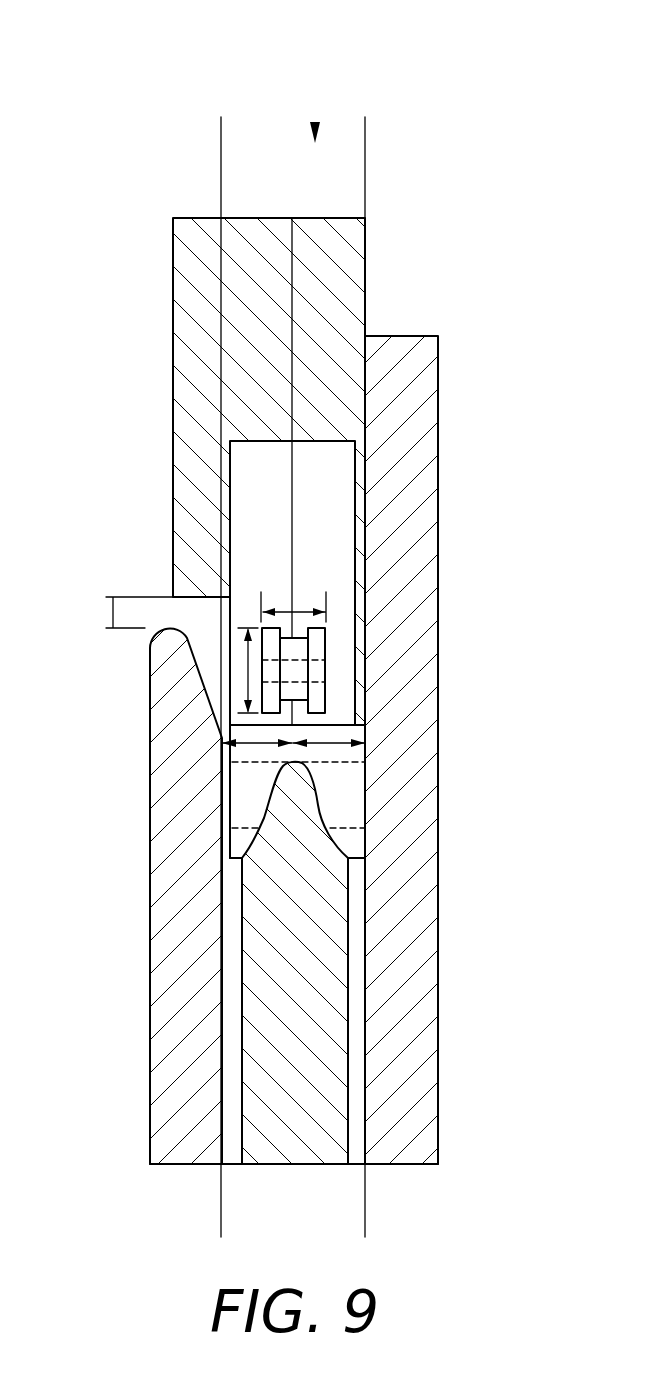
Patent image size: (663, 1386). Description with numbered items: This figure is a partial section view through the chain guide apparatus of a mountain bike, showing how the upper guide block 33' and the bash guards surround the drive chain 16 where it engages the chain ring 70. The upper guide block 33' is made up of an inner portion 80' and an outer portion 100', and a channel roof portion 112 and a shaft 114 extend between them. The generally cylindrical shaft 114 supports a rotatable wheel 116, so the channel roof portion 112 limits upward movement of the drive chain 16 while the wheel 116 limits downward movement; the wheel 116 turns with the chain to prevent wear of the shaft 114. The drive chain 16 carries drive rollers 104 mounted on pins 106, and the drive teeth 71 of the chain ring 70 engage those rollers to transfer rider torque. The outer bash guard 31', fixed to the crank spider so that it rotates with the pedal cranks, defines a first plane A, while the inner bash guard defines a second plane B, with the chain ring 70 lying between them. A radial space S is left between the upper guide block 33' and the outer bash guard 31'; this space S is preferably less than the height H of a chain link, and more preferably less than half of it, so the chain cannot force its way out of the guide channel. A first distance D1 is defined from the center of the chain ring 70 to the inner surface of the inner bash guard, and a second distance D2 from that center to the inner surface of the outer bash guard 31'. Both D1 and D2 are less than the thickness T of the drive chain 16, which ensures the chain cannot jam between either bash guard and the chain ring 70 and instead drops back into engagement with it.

The upper guide block 33' is at (295, 74).
The outer portion 100' is at (224, 499).
The inner portion 80' is at (432, 700).
The channel roof portion 112 is at (263, 403).
The drive chain 16 is at (333, 643).
The pins 106 is at (312, 672).
The drive rollers 104 is at (293, 704).
The shaft 114 is at (350, 808).
The drive teeth 71 is at (313, 842).
The chain ring 70 is at (332, 1040).
The outer bash guard 31' is at (140, 896).
The wheel 116 is at (243, 850).
The radial space S is at (113, 613).
The thickness of the drive chain T is at (300, 606).
The height of a link H is at (248, 662).
The first distance D1 is at (330, 753).
The second distance D2 is at (257, 745).
The first plane A is at (222, 1197).
The second plane B is at (366, 1197).